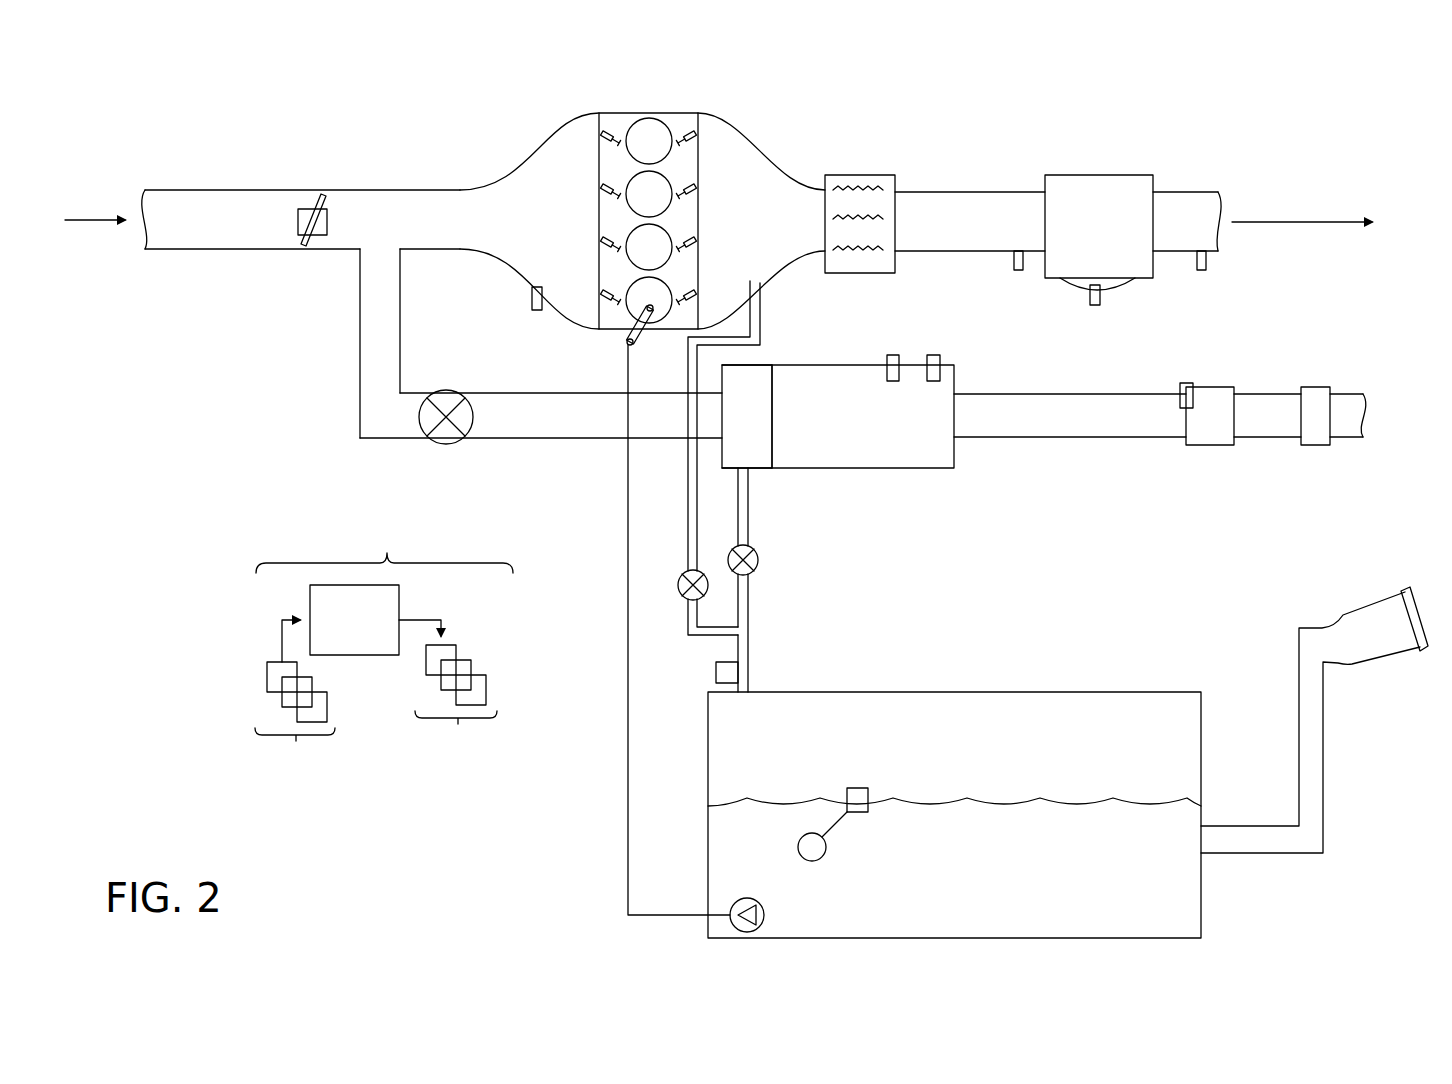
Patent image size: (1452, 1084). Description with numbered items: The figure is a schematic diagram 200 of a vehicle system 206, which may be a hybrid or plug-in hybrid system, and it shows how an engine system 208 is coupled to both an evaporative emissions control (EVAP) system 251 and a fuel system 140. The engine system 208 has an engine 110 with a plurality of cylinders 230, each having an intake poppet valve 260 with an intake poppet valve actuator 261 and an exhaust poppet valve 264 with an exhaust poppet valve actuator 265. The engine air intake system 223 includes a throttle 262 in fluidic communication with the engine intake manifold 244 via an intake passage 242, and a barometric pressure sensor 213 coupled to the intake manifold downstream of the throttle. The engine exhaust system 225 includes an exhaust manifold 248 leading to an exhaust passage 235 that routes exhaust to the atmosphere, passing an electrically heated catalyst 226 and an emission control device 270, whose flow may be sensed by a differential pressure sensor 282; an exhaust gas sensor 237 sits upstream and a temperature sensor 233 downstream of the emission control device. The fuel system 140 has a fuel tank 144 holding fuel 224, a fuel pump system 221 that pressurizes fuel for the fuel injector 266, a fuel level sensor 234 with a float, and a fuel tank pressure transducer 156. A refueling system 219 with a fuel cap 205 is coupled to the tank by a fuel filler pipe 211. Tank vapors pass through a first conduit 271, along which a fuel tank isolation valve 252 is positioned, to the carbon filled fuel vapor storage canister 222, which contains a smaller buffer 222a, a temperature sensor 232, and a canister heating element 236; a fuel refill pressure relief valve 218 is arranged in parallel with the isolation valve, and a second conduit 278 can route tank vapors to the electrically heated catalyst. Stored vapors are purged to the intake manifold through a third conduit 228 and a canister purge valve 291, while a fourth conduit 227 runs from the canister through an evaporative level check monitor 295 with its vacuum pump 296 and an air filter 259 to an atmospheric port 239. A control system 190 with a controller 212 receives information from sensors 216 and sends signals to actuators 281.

The schematic diagram 200 is at (1364, 94).
The vehicle system 206 is at (146, 124).
The engine system 208 is at (1001, 123).
The engine air intake system 223 is at (520, 136).
The engine exhaust system 225 is at (787, 141).
The electrically heated catalyst 226 is at (843, 175).
The emission control device 270 is at (1085, 175).
The exhaust passage 235 is at (1170, 192).
The intake poppet valve actuator 261 is at (604, 122).
The exhaust poppet valve actuator 265 is at (680, 120).
The intake poppet valve 260 is at (604, 131).
The exhaust poppet valve 264 is at (700, 130).
The cylinders 230 is at (666, 142).
The engine 110 is at (698, 203).
The engine intake manifold 244 is at (529, 221).
The exhaust manifold 248 is at (761, 221).
The throttle 262 is at (327, 220).
The intake passage 242 is at (360, 252).
The barometric pressure sensor 213 is at (532, 298).
The fuel injector 266 is at (637, 340).
The exhaust gas sensor 237 is at (1014, 262).
The temperature sensor 233 is at (1197, 262).
The differential pressure sensor 282 is at (1090, 296).
The buffer 222a is at (756, 365).
The temperature sensor 232 is at (890, 355).
The canister heating element 236 is at (933, 355).
The evaporative emissions control (EVAP) system 251 is at (1303, 331).
The vacuum pump 296 is at (1184, 383).
The evaporative level check monitor (ELCM) 295 is at (1210, 387).
The air filter 259 is at (1320, 387).
The atmospheric port 239 is at (1363, 437).
The canister purge valve (CPV) 291 is at (446, 392).
The third conduit 228 is at (541, 405).
The fourth conduit 227 is at (1158, 415).
The carbon filled fuel vapor storage canister 222 is at (955, 462).
The second conduit 278 is at (676, 478).
The fuel refill pressure relief valve (FRPRV) 218 is at (683, 590).
The fuel tank isolation valve (FTIV) 252 is at (752, 568).
The fuel cap 205 is at (1410, 587).
The refueling system 219 is at (1379, 583).
The fuel tank pressure transducer (FTPT) 156 is at (716, 676).
The first conduit 271 is at (750, 650).
The fuel tank 144 is at (1201, 795).
The fuel filler pipe 211 is at (1323, 780).
The fuel level sensor 234 is at (860, 788).
The fuel 224 is at (954, 815).
The fuel pump system 221 is at (750, 898).
The fuel system 140 is at (1254, 899).
The control system 190 is at (384, 648).
The controller 212 is at (354, 620).
The sensors 216 is at (295, 702).
The actuators 281 is at (449, 695).